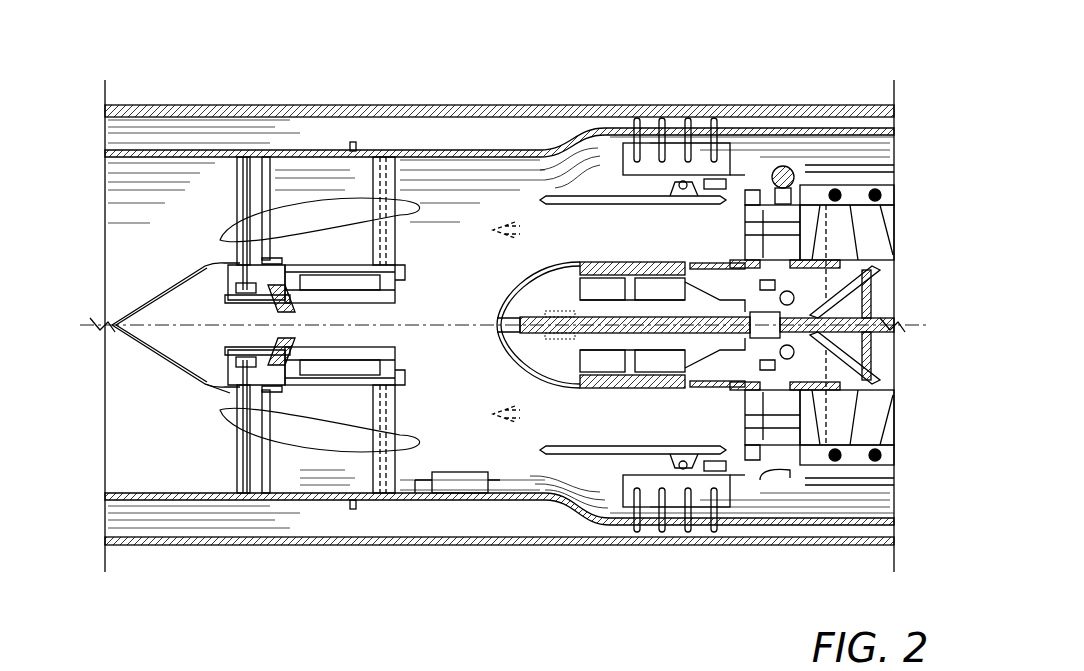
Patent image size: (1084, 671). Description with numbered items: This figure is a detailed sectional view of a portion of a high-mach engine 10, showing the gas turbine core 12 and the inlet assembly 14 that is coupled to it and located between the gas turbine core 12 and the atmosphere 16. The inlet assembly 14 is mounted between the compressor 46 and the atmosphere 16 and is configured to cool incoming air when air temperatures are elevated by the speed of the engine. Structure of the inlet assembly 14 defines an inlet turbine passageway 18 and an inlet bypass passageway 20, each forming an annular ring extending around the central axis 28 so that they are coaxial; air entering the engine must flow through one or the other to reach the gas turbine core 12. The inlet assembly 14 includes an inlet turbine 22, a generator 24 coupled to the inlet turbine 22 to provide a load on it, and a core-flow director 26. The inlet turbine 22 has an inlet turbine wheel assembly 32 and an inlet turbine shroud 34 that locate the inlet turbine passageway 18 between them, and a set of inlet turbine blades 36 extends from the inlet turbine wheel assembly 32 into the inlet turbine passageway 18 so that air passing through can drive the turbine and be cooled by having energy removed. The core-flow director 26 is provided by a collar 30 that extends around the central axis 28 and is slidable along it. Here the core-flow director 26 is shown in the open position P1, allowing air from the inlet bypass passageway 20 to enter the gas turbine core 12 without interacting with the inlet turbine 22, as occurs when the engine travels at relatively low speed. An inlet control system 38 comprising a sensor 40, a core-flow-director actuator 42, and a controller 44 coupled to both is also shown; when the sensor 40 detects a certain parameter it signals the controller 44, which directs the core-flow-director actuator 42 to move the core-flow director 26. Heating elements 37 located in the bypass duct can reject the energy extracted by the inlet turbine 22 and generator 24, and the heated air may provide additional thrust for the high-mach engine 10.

The high-mach engine 10 is at (124, 82).
The gas turbine core 12 is at (784, 188).
The inlet assembly 14 is at (326, 190).
The atmosphere 16 is at (86, 271).
The inlet turbine passageway 18 is at (232, 393).
The inlet bypass passageway 20 is at (324, 465).
The inlet turbine 22 is at (270, 255).
The generator 24 is at (338, 372).
The core-flow director 26 is at (571, 187).
The central axis 28 is at (929, 325).
The collar 30 is at (601, 197).
The inlet turbine wheel assembly 32 is at (249, 372).
The inlet turbine shroud 34 is at (280, 245).
The inlet turbine blades 36 is at (269, 395).
The heating elements 37 is at (338, 267).
The inlet control system 38 is at (592, 607).
The sensor 40 is at (418, 480).
The core-flow-director actuator 42 is at (712, 472).
The controller 44 is at (497, 480).
The compressor 46 is at (852, 160).
The open position P1 is at (540, 104).